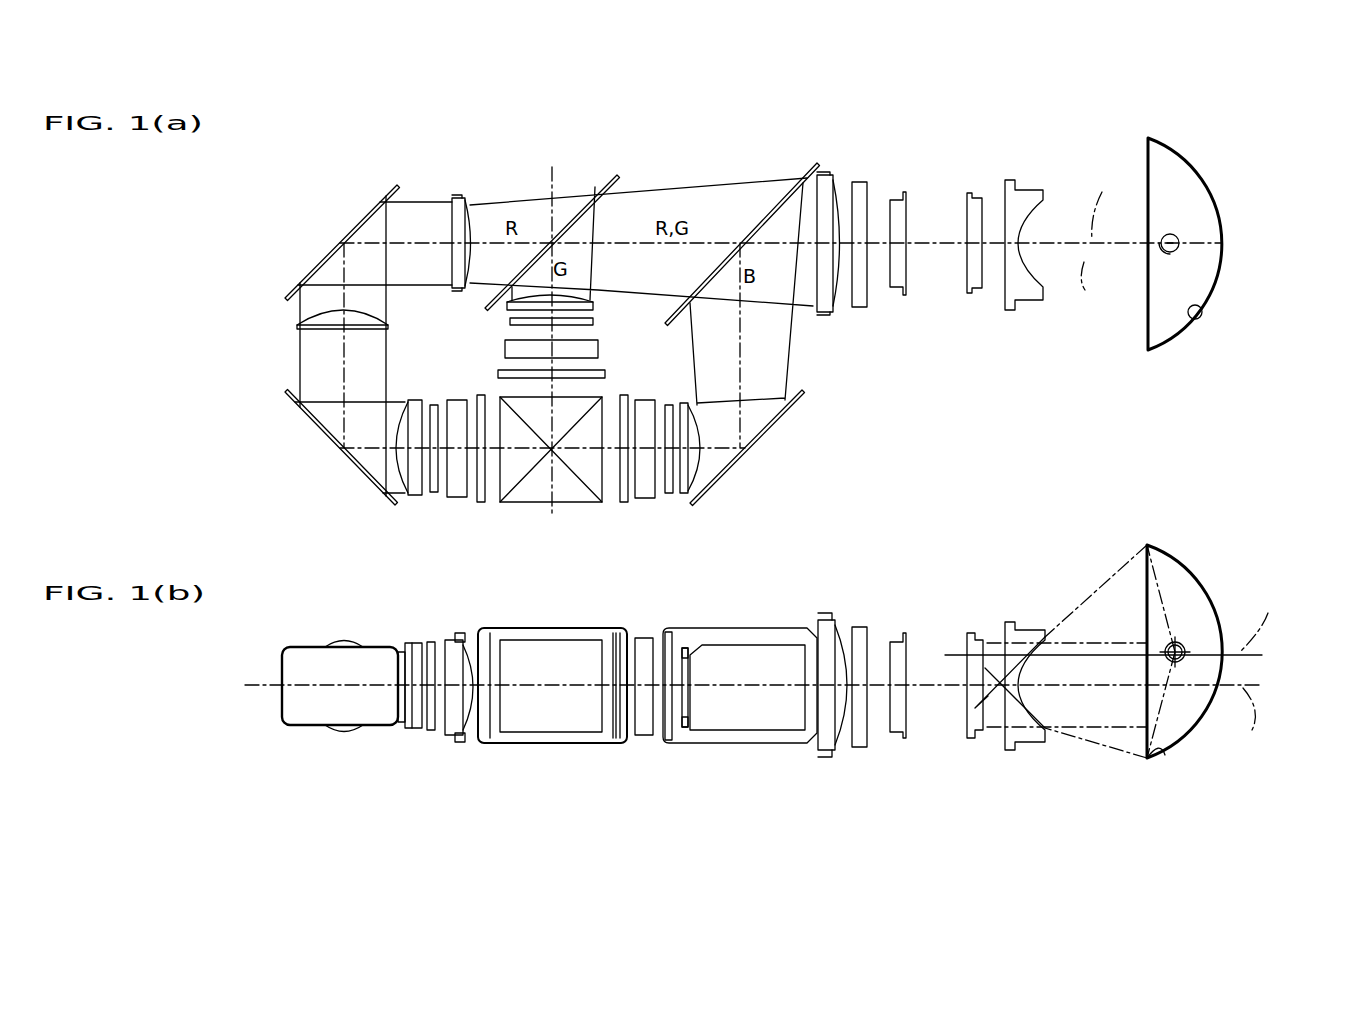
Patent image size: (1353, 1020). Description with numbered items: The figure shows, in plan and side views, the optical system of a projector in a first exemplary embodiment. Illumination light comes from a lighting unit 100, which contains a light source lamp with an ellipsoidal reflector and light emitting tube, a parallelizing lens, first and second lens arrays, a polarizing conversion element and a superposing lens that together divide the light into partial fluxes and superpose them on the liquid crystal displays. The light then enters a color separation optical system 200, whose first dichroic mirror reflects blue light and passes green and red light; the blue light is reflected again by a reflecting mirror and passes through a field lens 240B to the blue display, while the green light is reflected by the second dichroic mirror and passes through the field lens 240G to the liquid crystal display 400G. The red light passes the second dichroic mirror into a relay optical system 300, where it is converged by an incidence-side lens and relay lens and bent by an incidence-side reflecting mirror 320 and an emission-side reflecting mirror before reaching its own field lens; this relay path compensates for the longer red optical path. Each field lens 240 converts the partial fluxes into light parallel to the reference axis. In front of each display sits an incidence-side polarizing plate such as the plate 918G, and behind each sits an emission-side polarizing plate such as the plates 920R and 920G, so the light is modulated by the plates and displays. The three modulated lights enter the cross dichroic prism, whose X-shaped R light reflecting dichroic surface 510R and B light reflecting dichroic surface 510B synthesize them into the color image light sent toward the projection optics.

The lighting unit 100 is at (1032, 157).
The color separation optical system 200 is at (657, 175).
The field lens 240 is at (688, 728).
The field lens for G light 240G is at (585, 300).
The field lens for B light 240B is at (688, 468).
The relay optical system 300 is at (300, 243).
The incidence-side reflecting mirror 320 is at (365, 215).
The liquid crystal display for G light 400G is at (598, 350).
The R light reflecting dichroic surface 510R is at (508, 413).
The B light reflecting dichroic surface 510B is at (522, 490).
The incidence-side polarizing plate for G light 918G is at (593, 322).
The emission-side polarizing plate for R light 920R is at (481, 503).
The emission-side polarizing plate for G light 920G is at (498, 372).